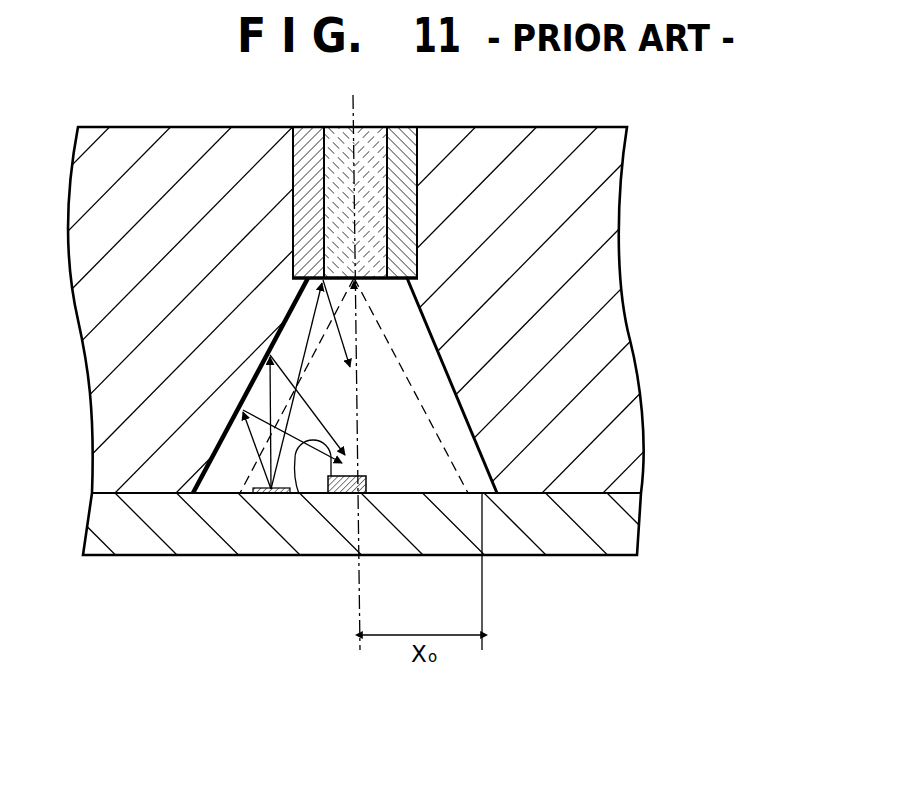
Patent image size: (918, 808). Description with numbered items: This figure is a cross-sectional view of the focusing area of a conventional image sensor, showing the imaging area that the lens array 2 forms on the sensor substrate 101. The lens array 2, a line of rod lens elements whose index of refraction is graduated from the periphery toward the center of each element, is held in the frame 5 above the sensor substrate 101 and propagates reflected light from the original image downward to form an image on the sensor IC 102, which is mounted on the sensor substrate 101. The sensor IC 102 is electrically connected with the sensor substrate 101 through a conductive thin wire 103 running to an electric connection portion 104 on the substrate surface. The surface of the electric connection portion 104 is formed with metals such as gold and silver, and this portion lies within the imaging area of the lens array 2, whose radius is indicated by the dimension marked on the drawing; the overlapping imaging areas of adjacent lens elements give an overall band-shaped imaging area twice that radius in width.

The lens array 2 is at (400, 212).
The frame 5 is at (555, 325).
The sensor substrate 101 is at (608, 518).
The sensor IC 102 is at (342, 494).
The conductive thin wire 103 is at (299, 494).
The electric connection portion 104 is at (263, 494).